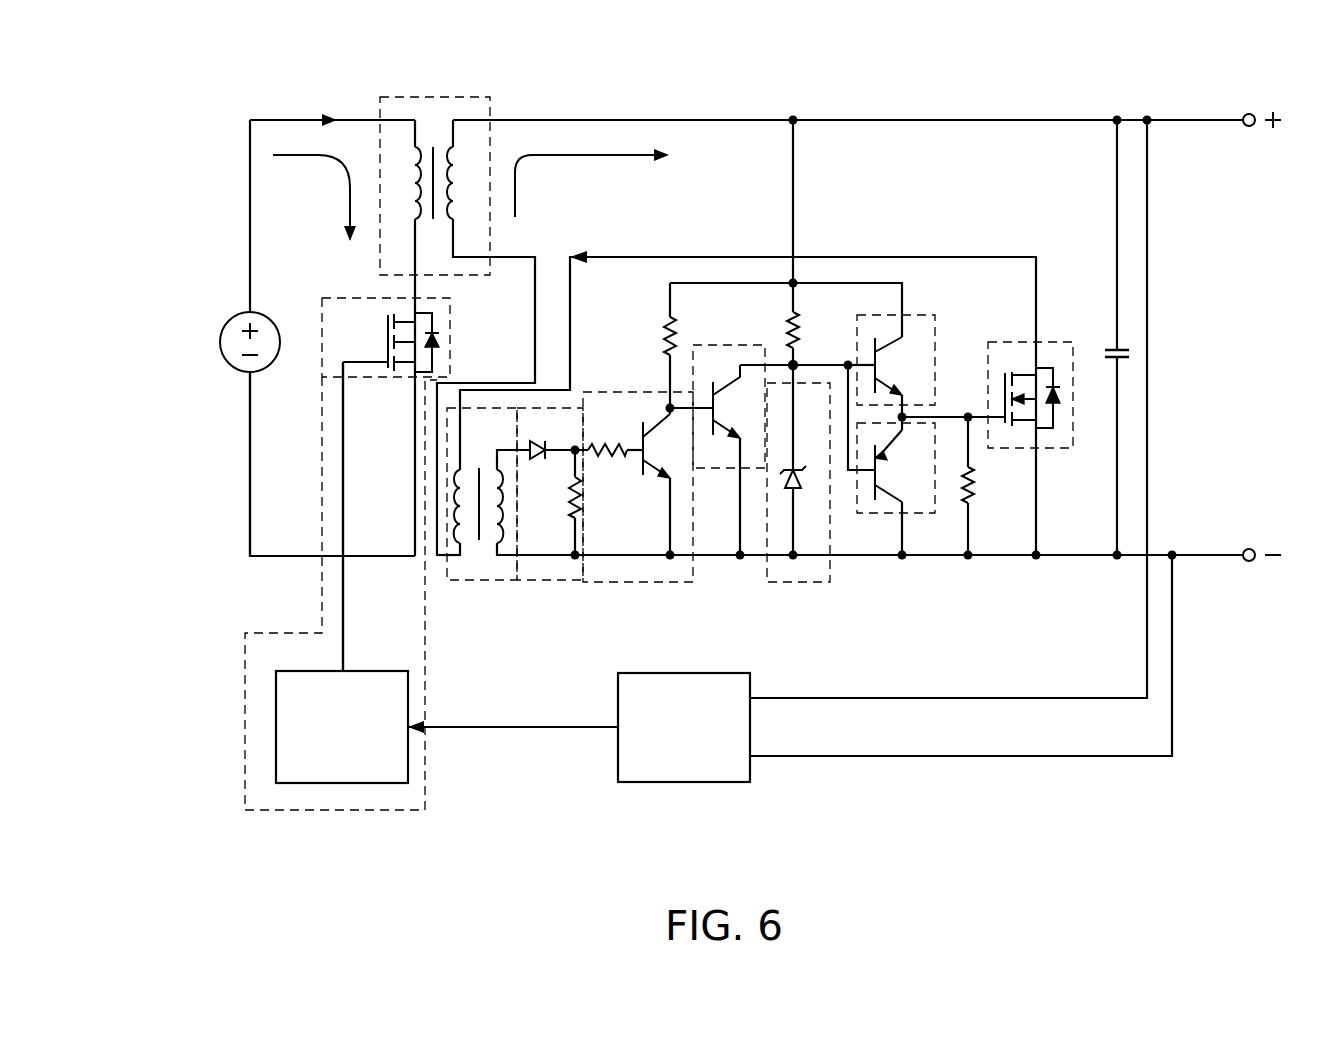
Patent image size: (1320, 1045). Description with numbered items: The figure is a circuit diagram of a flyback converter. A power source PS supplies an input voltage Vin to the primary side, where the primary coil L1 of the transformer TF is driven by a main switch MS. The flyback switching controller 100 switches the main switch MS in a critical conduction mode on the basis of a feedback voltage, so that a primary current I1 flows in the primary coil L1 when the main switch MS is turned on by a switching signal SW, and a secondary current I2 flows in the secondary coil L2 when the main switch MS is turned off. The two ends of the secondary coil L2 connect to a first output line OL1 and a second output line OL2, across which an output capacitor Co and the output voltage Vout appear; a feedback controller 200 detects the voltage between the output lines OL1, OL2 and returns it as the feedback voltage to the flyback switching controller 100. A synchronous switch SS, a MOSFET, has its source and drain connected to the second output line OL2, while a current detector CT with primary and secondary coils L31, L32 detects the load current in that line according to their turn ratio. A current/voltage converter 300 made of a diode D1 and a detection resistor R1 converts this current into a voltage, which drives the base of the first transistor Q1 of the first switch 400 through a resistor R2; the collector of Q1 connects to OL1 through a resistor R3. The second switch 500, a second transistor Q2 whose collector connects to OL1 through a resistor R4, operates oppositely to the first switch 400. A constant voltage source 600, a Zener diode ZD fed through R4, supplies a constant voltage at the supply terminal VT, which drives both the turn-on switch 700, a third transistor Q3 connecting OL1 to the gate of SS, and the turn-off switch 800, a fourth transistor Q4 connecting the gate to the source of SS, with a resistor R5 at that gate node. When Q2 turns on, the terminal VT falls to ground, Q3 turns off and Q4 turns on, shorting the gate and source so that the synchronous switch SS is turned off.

The flyback switching controller 100 is at (245, 768).
The feedback controller 200 is at (693, 782).
The current/voltage converter 300 is at (556, 583).
The first switch 400 is at (640, 583).
The second switch 500 is at (723, 345).
The constant voltage source 600 is at (812, 585).
The turn-on switch 700 is at (912, 315).
The turn-off switch 800 is at (922, 515).
The transformer TF is at (437, 97).
The primary coil L1 is at (403, 183).
The secondary coil L2 is at (465, 183).
The primary current detection coil L31 is at (456, 528).
The secondary current detection coil L32 is at (506, 528).
The current detector CT is at (485, 583).
The main switch MS is at (386, 337).
The power source PS is at (228, 342).
The input voltage Vin is at (280, 464).
The output voltage Vout is at (1262, 230).
The primary current I1 is at (314, 198).
The secondary current I2 is at (592, 183).
The switching signal SW is at (368, 516).
The diode D1 is at (538, 437).
The resistor for voltage detection R1 is at (560, 497).
The resistor R2 is at (607, 436).
The resistor R3 is at (654, 335).
The resistor R4 is at (808, 330).
The fifth resistor R5 is at (984, 486).
The first transistor Q1 is at (665, 446).
The second transistor Q2 is at (736, 401).
The third transistor Q3 is at (900, 366).
The fourth transistor Q4 is at (896, 466).
The Zener diode ZD is at (815, 480).
The constant voltage supply terminal VT is at (790, 360).
The synchronous switch SS is at (1070, 450).
The output capacitor Co is at (1103, 336).
The first output line OL1 is at (978, 118).
The second output line OL2 is at (1082, 560).